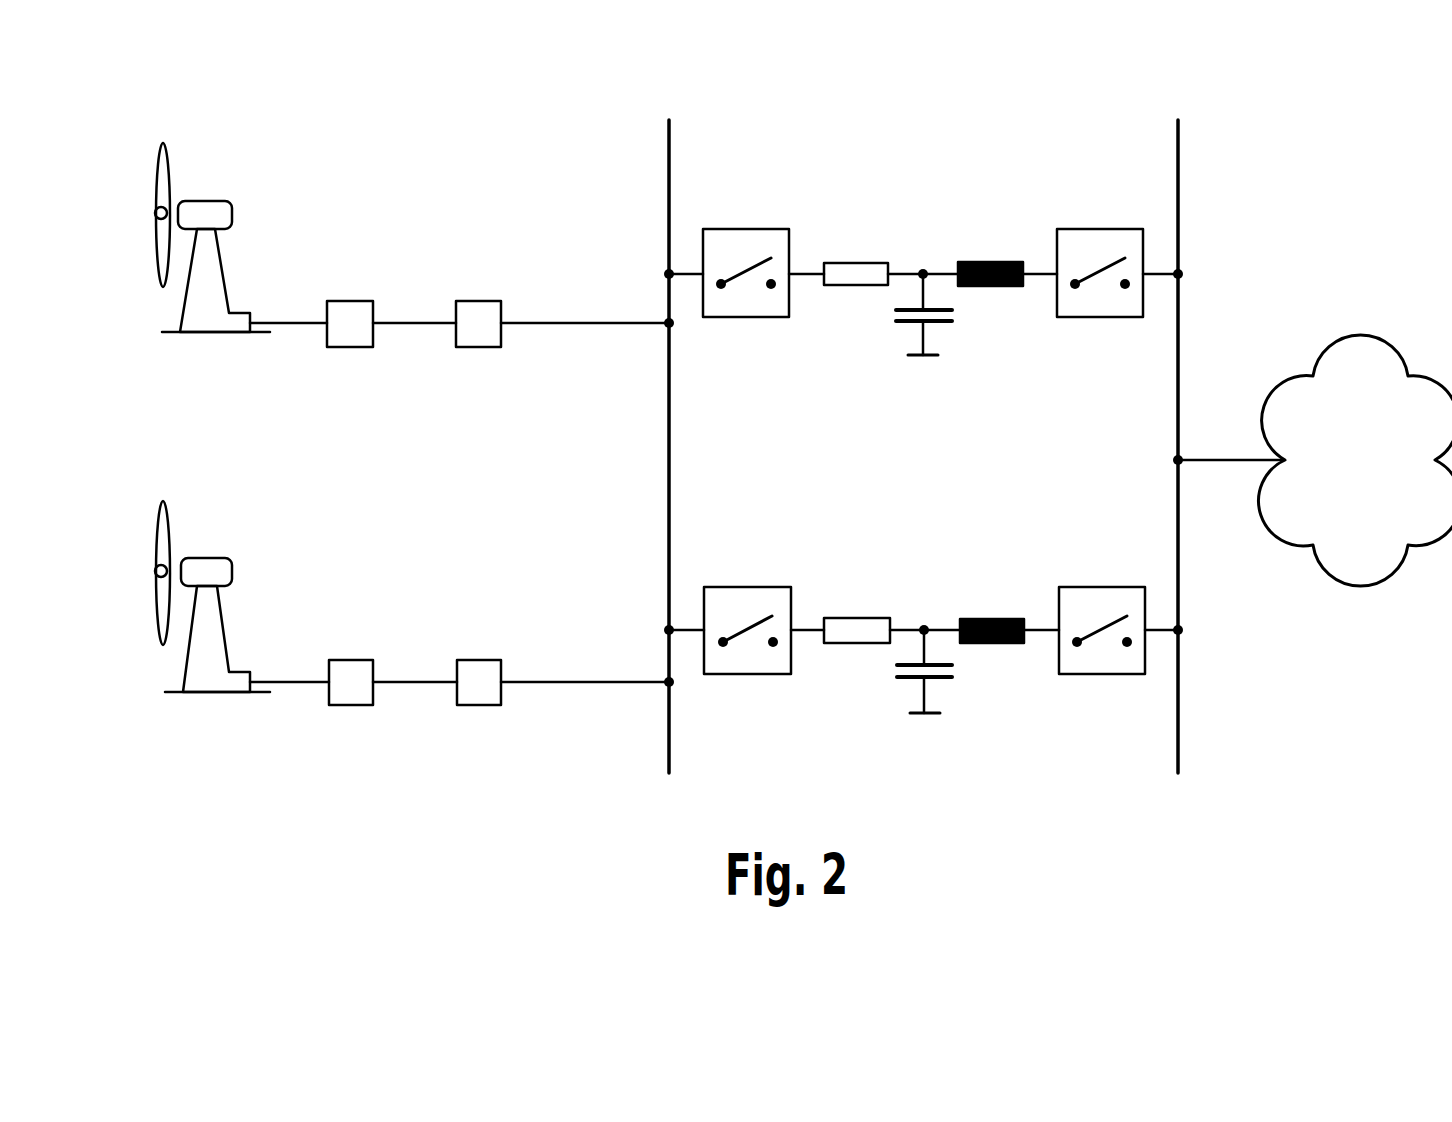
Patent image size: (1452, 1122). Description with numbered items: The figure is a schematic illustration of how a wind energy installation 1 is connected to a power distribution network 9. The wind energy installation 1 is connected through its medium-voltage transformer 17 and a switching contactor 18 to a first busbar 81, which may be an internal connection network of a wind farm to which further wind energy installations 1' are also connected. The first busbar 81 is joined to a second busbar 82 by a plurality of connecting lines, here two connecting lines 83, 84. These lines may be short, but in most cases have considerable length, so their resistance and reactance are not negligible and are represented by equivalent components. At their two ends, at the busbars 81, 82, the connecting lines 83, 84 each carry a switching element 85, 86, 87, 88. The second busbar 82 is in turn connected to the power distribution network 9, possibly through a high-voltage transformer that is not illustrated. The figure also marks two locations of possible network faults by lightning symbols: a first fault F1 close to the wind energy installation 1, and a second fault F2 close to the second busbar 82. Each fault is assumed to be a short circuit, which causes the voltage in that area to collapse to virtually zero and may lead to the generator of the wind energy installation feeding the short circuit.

The wind energy installation 1 is at (237, 596).
The further wind energy installations 1' is at (243, 237).
The medium-voltage transformer 17 is at (352, 660).
The switching contactor 18 is at (482, 660).
The first busbar 81 is at (668, 150).
The second busbar 82 is at (1180, 150).
The connecting line 83 is at (1161, 636).
The connecting line 84 is at (1159, 280).
The switching element 85 is at (750, 587).
The switching element 86 is at (1104, 587).
The switching element 87 is at (748, 229).
The switching element 88 is at (1103, 229).
The power distribution network 9 is at (1370, 482).
The first fault F1 is at (303, 697).
The second fault F2 is at (1037, 647).